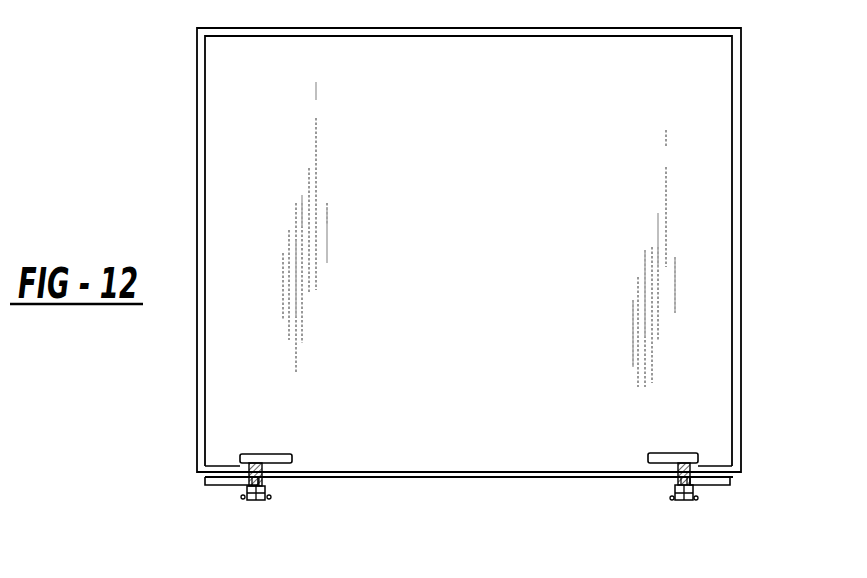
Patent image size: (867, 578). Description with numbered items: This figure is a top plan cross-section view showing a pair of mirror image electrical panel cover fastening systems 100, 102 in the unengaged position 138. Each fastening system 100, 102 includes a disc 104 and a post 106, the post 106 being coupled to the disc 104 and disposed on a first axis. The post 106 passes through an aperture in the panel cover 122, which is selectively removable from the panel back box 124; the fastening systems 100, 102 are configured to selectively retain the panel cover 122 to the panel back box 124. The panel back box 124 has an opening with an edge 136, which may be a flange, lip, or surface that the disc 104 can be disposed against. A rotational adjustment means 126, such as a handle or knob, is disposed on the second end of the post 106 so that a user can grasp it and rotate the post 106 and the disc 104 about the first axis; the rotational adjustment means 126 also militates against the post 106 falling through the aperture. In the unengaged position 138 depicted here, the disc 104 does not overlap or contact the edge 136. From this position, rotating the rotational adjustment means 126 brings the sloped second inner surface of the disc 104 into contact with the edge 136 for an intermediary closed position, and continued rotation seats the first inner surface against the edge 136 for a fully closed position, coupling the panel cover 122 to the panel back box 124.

The unengaged position 138 is at (138, 145).
The panel back box 124 is at (744, 95).
The panel cover 122 is at (418, 480).
The edge 136 is at (223, 465).
The disc 104 is at (270, 452).
The electrical panel cover fastening system 102 is at (256, 452).
The electrical panel cover fastening system 100 is at (686, 451).
The post 106 is at (263, 473).
The rotational adjustment means 126 is at (248, 503).